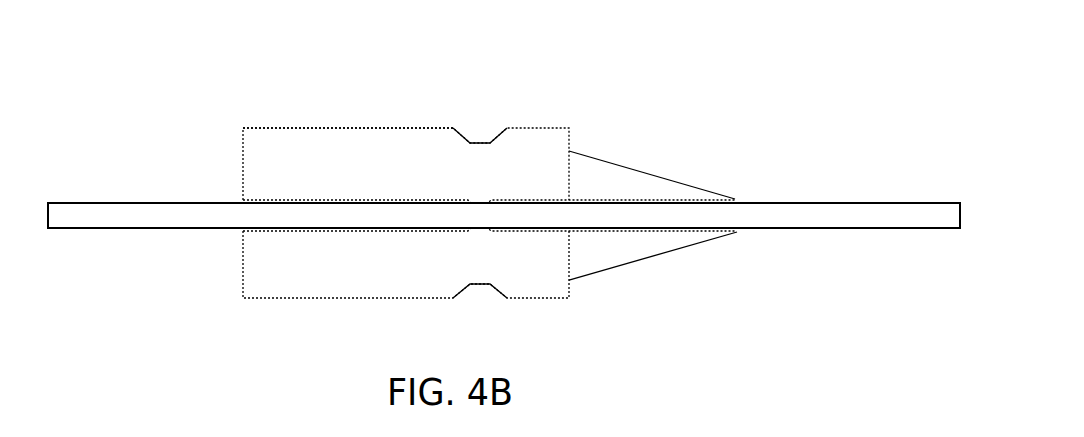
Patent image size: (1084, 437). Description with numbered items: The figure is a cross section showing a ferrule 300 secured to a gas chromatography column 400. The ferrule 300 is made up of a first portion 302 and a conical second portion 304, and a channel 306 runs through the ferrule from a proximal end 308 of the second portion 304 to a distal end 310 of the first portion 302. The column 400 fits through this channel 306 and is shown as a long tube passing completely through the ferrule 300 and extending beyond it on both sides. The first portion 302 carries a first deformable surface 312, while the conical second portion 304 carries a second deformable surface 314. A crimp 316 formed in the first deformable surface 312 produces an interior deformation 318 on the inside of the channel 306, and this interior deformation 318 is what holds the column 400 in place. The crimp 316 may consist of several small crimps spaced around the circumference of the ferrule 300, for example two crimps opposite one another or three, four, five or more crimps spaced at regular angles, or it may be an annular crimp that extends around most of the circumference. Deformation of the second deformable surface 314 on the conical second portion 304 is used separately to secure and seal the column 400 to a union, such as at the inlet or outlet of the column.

The ferrule 300 is at (648, 92).
The first portion 302 is at (345, 258).
The conical second portion 304 is at (618, 249).
The channel 306 is at (315, 232).
The proximal end 308 is at (733, 199).
The distal end 310 is at (245, 155).
The first deformable surface 312 is at (407, 128).
The second deformable surface 314 is at (640, 167).
The crimp 316 is at (481, 143).
The interior deformation 318 is at (480, 228).
The gas chromatography column 400 is at (192, 218).